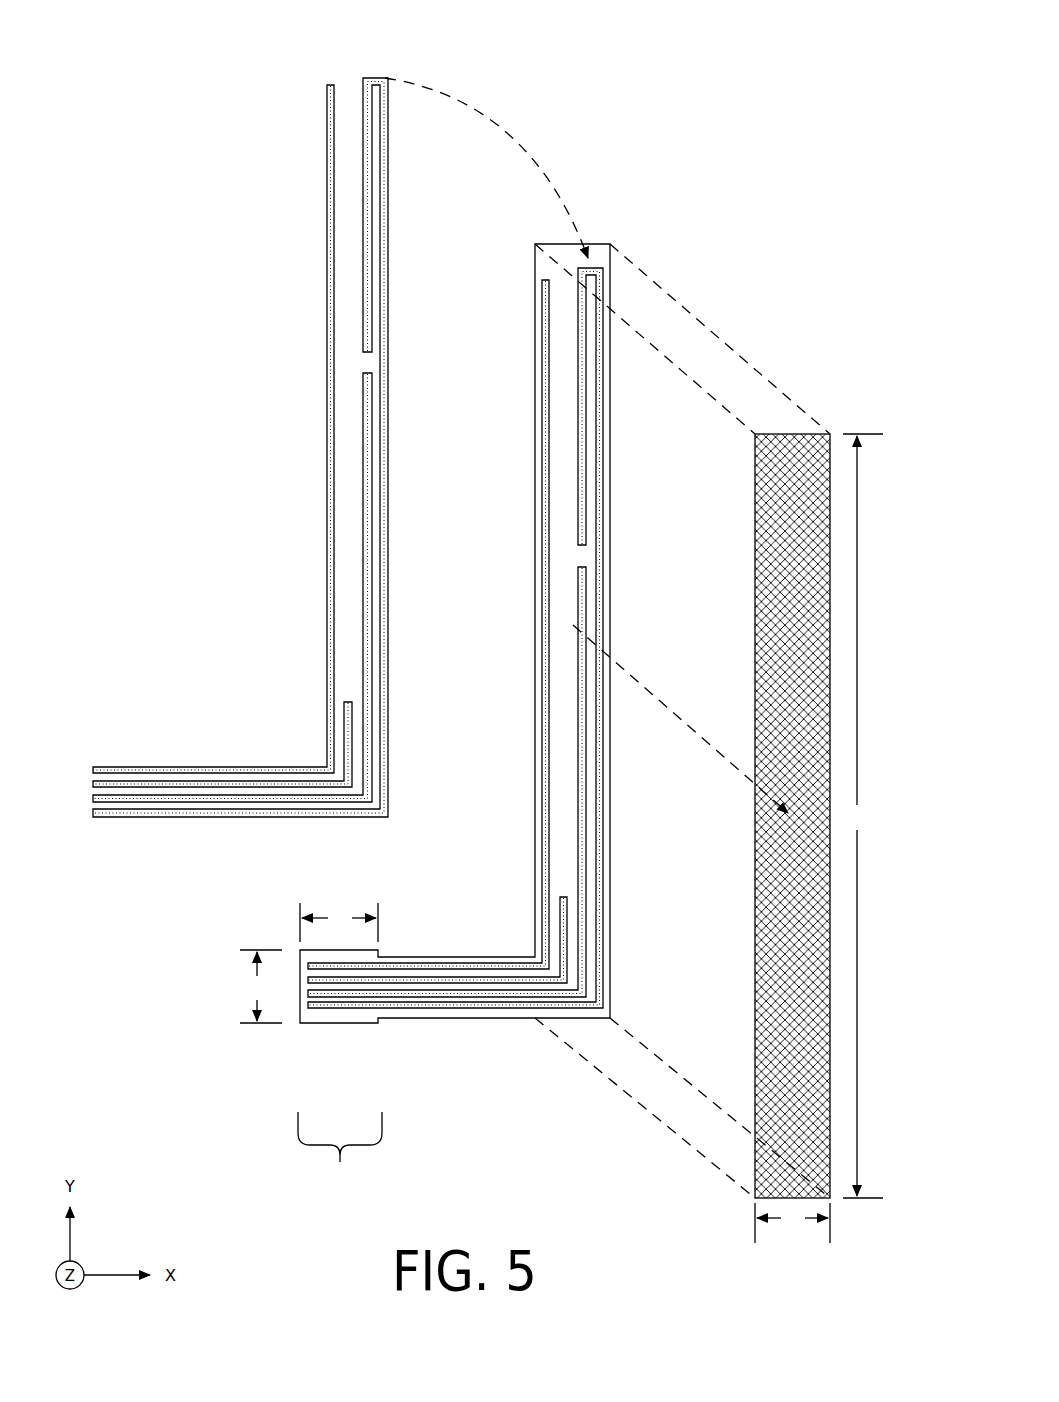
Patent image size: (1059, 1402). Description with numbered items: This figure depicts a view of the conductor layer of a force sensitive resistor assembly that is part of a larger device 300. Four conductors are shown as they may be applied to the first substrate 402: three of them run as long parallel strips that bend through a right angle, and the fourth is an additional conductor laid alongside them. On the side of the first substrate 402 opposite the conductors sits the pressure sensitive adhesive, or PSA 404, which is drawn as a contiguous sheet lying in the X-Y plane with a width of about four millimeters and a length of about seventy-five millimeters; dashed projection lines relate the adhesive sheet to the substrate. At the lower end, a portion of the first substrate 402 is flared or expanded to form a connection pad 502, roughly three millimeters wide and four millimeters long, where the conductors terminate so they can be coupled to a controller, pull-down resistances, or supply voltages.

The sensor assembly 300 is at (730, 33).
The first substrate 402 is at (333, 1013).
The pressure sensitive adhesive (PSA) 404 is at (783, 1032).
The connection pad 502 is at (314, 1059).